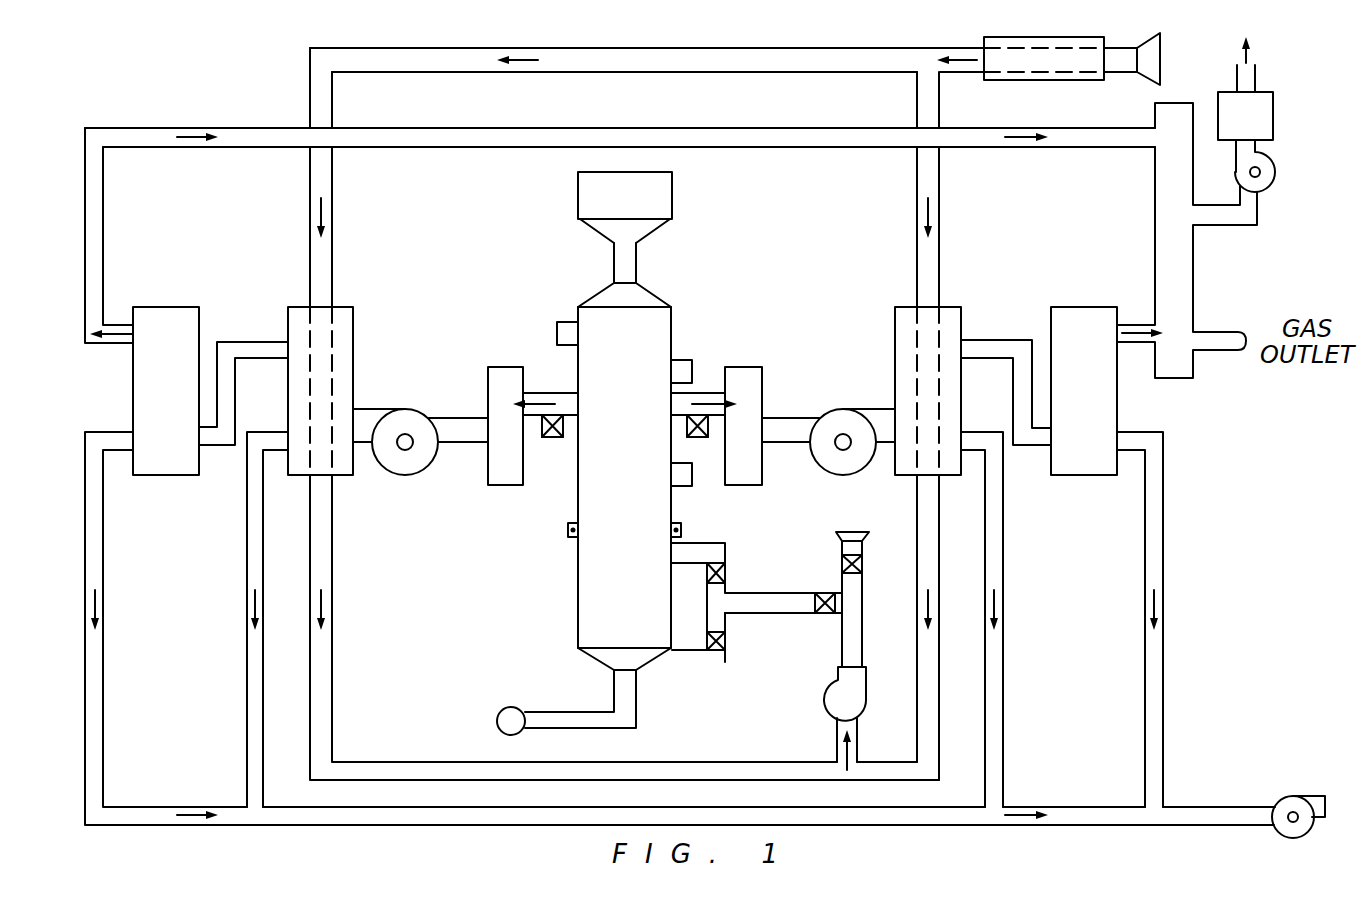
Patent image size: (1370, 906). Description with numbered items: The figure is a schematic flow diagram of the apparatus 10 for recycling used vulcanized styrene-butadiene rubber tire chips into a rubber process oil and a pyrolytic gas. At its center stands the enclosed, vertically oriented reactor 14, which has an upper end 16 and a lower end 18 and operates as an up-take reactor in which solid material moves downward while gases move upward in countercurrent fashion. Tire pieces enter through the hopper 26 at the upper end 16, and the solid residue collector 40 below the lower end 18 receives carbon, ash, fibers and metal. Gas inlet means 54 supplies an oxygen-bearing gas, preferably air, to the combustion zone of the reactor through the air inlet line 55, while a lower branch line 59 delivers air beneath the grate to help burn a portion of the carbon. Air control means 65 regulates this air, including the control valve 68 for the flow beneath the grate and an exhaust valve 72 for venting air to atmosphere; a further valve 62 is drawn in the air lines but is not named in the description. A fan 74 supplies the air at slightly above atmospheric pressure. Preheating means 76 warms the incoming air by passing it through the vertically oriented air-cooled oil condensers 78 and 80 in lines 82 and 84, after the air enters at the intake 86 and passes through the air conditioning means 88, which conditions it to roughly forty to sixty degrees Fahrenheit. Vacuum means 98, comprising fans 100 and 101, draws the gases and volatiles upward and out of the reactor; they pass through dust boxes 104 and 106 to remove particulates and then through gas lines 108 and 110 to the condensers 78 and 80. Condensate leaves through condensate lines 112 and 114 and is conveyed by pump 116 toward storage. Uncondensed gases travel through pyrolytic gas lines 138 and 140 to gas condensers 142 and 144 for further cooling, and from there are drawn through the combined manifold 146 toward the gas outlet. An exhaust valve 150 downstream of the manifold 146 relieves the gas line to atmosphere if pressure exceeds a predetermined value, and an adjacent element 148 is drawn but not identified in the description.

The apparatus 10 is at (840, 40).
The reactor 14 is at (662, 331).
The upper end 16 is at (586, 314).
The lower end 18 is at (607, 657).
The hopper 26 is at (582, 201).
The solid residue collector 40 is at (630, 712).
The gas inlet means 54 is at (774, 580).
The air inlet line 55 is at (710, 548).
The lower branch line 59 is at (716, 657).
The valve 62 is at (727, 576).
The air control means 65 is at (820, 624).
The control valve 68 is at (724, 636).
The exhaust valve 72 is at (866, 565).
The fan 74 is at (838, 707).
The preheating means 76 is at (898, 290).
The air cooled oil condenser 78 is at (950, 317).
The air cooled oil condenser 80 is at (338, 342).
The line 82 is at (932, 701).
The line 84 is at (322, 697).
The intake 86 is at (1162, 60).
The air conditioning means 88 is at (1020, 83).
The vacuum means 98 is at (874, 388).
The fan 100 is at (827, 462).
The fan 101 is at (400, 467).
The dust box 104 is at (747, 377).
The dust box 106 is at (511, 377).
The gas line 108 is at (780, 423).
The gas line 110 is at (463, 425).
The condensate line 112 is at (995, 656).
The condensate line 114 is at (247, 525).
The pump 116 is at (1286, 800).
The pyrolytic gas line 138 is at (981, 347).
The pyrolytic gas line 140 is at (228, 337).
The gas condenser 142 is at (155, 313).
The gas condenser 144 is at (1071, 317).
The combined manifold 146 is at (1180, 283).
The pump 148 is at (1266, 167).
The exhaust valve 150 is at (1262, 115).